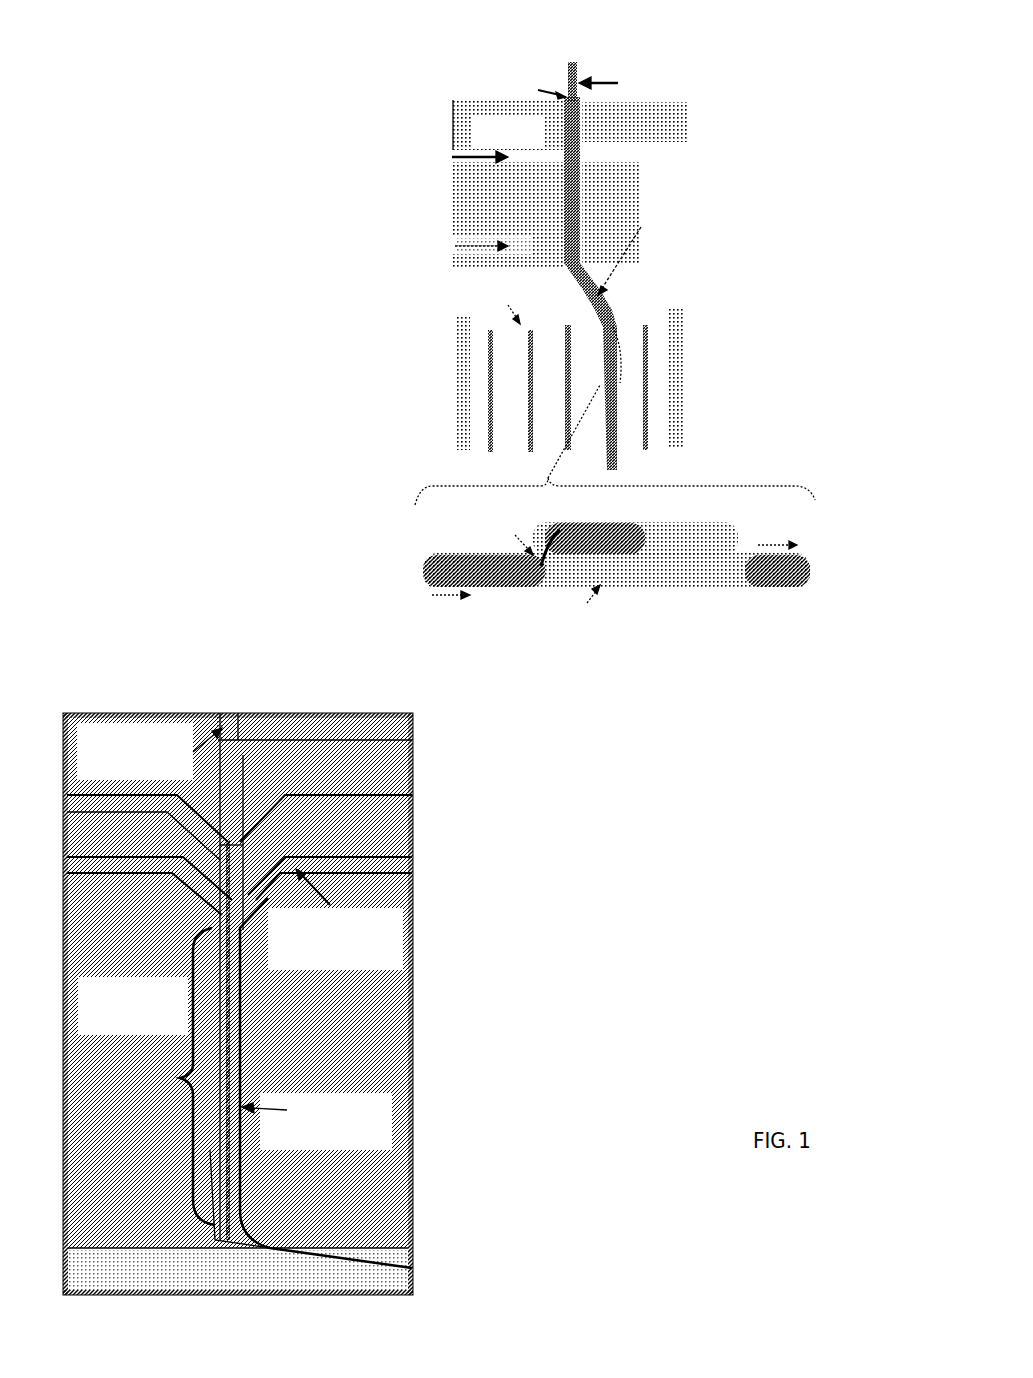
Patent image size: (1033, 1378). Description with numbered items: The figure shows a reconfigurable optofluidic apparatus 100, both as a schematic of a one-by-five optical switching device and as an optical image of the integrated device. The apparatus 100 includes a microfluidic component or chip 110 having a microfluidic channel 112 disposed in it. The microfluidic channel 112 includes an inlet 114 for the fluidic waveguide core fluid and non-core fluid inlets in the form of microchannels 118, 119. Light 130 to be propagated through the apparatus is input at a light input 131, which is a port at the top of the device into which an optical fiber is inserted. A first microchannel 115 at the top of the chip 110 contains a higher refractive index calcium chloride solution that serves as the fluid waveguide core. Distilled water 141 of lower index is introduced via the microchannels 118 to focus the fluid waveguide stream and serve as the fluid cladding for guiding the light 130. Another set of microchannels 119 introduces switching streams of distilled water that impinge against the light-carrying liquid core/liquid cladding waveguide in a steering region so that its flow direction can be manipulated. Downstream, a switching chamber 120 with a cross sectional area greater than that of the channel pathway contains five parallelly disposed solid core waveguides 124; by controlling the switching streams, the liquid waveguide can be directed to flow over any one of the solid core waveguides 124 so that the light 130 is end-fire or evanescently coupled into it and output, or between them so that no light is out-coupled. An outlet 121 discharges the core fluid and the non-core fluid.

The reconfigurable optofluidic apparatus 100 is at (335, 40).
The microfluidic component 110 is at (437, 200).
The microfluidic channel 112 is at (578, 180).
The inlet 114 is at (335, 740).
The first microchannel 115 is at (556, 128).
The microchannels 118 is at (375, 160).
The microchannels 119 is at (372, 238).
The switching chamber 120 is at (487, 417).
The outlet 121 is at (437, 470).
The solid core waveguides 124 is at (530, 397).
The light 130 is at (635, 61).
The light input port 131 is at (570, 94).
The distilled water 141 is at (447, 128).